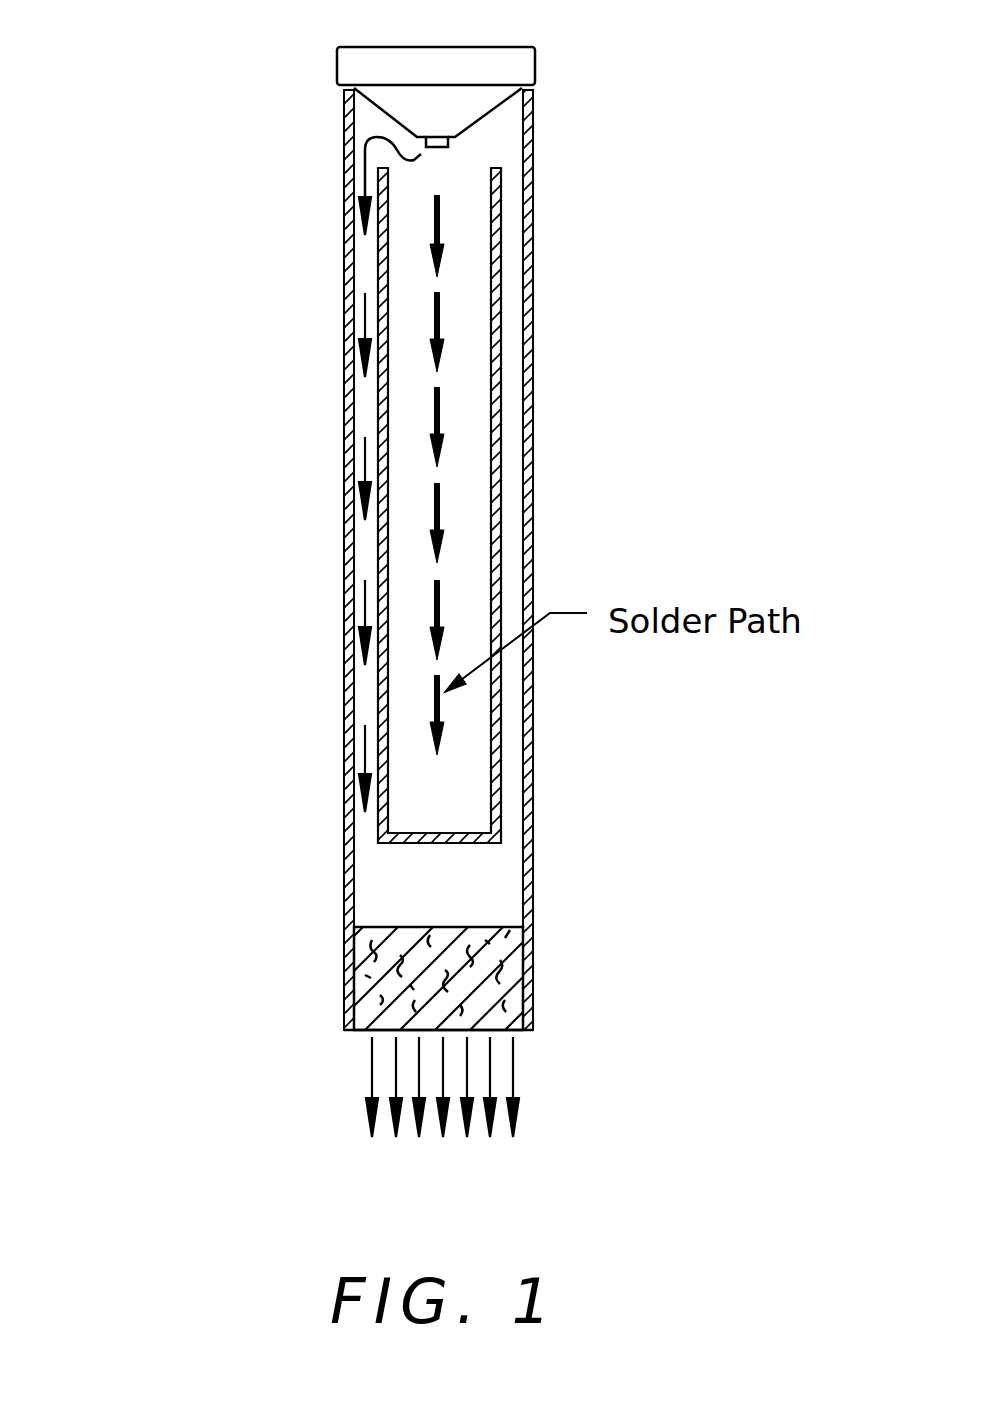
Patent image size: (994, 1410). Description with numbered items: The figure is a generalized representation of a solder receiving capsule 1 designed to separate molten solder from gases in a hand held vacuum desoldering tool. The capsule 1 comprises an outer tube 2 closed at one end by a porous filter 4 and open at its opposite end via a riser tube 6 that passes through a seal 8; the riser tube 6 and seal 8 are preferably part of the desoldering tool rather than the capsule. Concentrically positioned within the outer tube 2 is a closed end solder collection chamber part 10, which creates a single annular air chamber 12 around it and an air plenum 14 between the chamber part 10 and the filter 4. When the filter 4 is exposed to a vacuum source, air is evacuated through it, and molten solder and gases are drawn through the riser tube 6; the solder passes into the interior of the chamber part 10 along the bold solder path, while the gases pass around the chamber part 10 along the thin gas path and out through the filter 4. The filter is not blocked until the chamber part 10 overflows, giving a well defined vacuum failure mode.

The solder receiving capsule 1 is at (162, 17).
The outer tube 2 is at (532, 352).
The porous filter 4 is at (487, 980).
The riser tube 6 is at (451, 144).
The seal 8 is at (538, 65).
The solder collection chamber part 10 is at (500, 510).
The air chamber 12 is at (362, 462).
The air plenum 14 is at (477, 888).